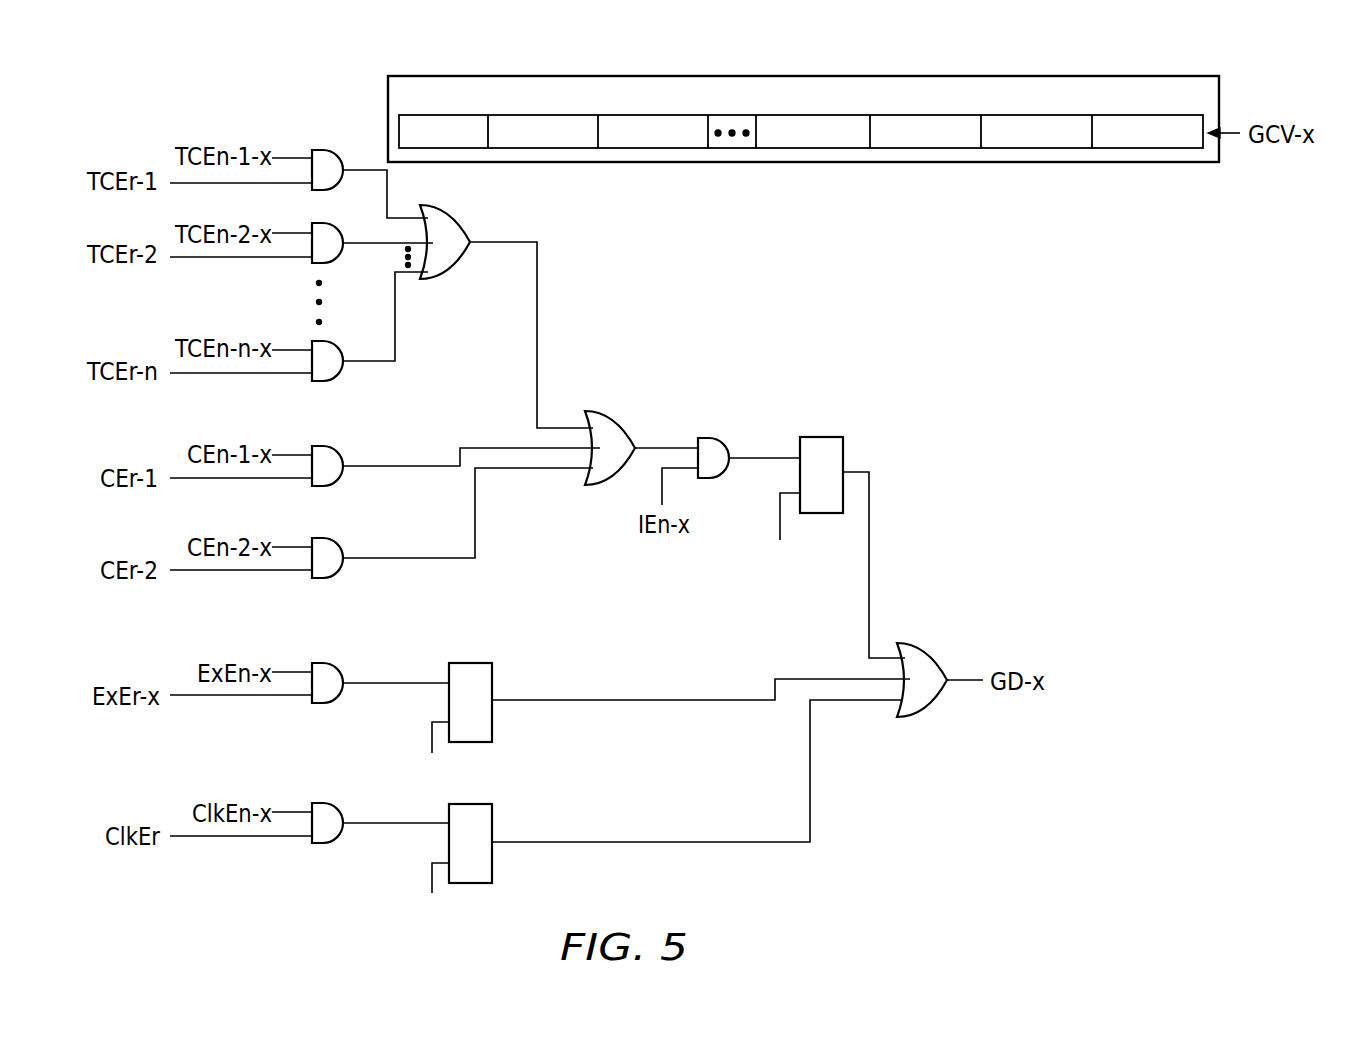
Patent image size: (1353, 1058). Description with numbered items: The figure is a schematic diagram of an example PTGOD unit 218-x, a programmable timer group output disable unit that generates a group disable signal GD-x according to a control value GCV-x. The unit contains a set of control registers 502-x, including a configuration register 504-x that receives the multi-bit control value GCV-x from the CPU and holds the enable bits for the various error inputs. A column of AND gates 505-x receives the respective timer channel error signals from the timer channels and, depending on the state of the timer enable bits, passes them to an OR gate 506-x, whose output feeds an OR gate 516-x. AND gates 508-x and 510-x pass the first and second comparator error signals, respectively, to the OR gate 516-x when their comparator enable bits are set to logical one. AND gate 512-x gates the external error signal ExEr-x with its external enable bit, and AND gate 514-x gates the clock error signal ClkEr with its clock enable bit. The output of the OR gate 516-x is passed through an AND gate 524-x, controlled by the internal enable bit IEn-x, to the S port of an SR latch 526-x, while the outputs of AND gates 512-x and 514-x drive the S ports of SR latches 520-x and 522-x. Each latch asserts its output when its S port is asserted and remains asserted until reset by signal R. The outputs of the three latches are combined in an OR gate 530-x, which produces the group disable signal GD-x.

The PTGOD unit 218-x is at (263, 68).
The set of control registers 502-x is at (920, 76).
The configuration register 504-x is at (748, 115).
The AND gates 505-x is at (315, 150).
The OR gate 506-x is at (463, 223).
The AND gate 508-x is at (340, 485).
The AND gate 510-x is at (340, 577).
The AND gate 512-x is at (340, 702).
The AND gate 514-x is at (340, 842).
The OR gate 516-x is at (597, 411).
The SR latch 520-x is at (492, 685).
The SR latch 522-x is at (492, 825).
The AND gate 524-x is at (706, 438).
The SR latch 526-x is at (820, 437).
The OR gate 530-x is at (910, 644).